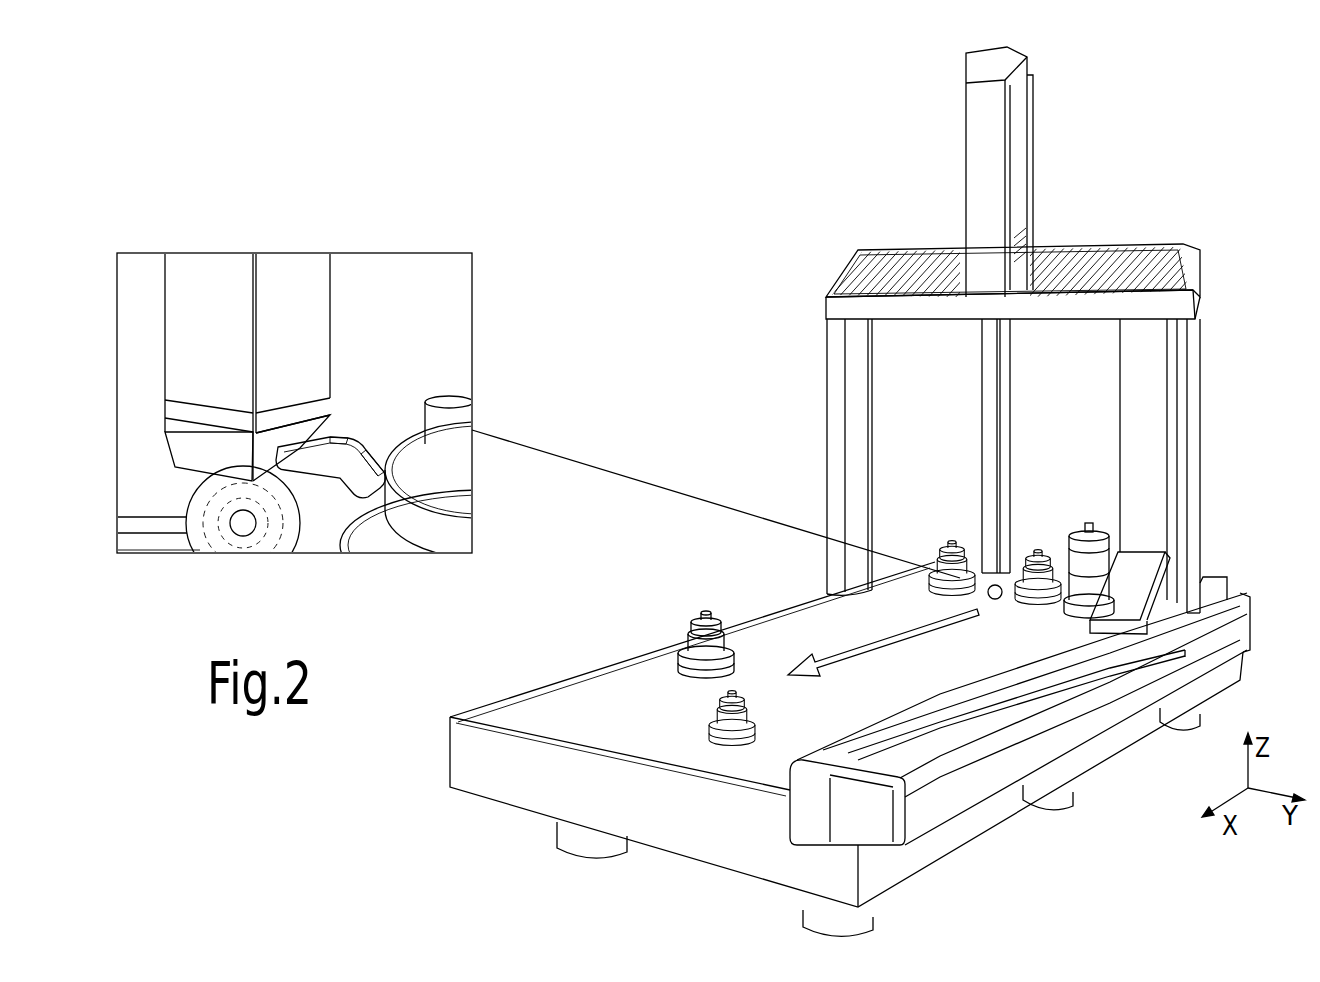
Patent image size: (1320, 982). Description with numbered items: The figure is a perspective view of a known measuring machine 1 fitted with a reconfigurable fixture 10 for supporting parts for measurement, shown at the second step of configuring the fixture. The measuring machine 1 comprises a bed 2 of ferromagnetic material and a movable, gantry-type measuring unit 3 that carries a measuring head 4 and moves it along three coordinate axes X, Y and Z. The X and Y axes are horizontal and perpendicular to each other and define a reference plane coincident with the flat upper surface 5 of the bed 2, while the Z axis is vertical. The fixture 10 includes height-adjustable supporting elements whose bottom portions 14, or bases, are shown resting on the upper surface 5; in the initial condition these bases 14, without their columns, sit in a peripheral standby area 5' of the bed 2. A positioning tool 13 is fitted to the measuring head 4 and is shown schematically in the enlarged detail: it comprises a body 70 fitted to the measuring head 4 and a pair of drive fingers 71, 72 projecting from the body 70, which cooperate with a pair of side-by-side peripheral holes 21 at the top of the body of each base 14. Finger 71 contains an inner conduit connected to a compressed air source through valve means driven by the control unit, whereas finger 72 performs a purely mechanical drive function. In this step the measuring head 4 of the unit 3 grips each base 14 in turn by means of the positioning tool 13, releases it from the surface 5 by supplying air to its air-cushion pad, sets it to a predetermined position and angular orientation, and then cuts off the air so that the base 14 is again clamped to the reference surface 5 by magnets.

The measuring machine 1 is at (1114, 208).
The bed 2 is at (470, 755).
The measuring unit 3 is at (1206, 430).
The measuring head 4 is at (992, 492).
The upper surface 5 is at (692, 642).
The peripheral standby area 5' is at (883, 590).
The reconfigurable fixture 10 is at (1046, 510).
The positioning tool 13 is at (345, 436).
The bottom portion 14 is at (670, 662).
The peripheral holes 21 is at (374, 462).
The body 70 is at (194, 461).
The drive finger 71 is at (308, 462).
The drive finger 72 is at (356, 430).